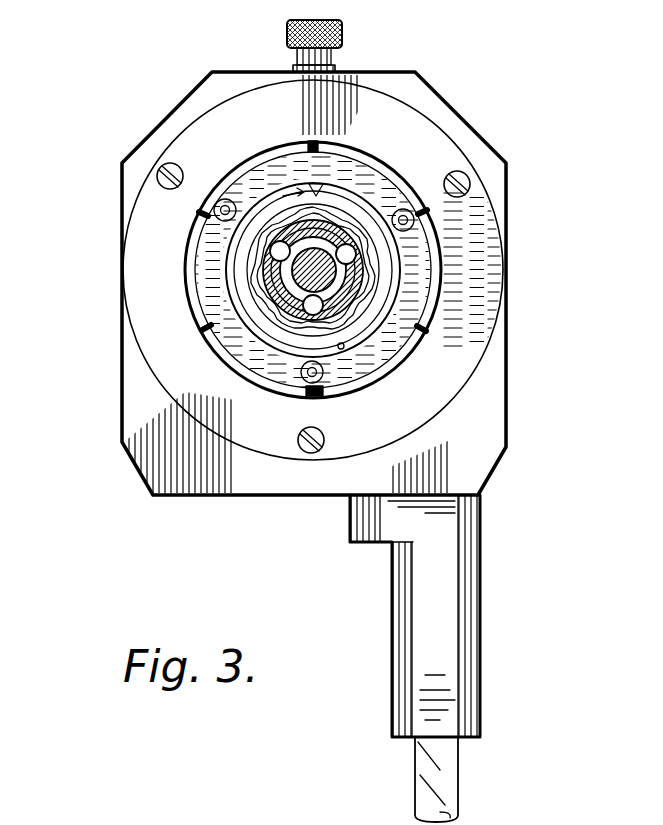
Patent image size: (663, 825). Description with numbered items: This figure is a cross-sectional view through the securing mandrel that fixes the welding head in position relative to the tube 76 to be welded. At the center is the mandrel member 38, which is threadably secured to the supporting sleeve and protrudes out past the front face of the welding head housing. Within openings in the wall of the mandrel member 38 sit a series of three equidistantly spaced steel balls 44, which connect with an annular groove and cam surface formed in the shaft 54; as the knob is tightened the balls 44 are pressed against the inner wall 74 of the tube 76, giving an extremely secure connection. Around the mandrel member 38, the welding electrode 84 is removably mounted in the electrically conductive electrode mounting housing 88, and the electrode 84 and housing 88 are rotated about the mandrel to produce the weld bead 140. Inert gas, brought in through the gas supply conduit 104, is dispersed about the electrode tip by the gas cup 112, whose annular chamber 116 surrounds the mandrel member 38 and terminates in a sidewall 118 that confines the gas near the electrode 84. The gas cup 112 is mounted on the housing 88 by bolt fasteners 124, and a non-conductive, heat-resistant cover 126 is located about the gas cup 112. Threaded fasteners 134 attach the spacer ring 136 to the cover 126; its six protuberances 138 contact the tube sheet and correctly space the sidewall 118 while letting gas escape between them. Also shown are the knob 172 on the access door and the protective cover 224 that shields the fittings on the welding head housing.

The mandrel member 38 is at (337, 258).
The second series of balls 44 is at (272, 222).
The shaft 54 is at (355, 272).
The inner wall 74 is at (293, 398).
The tube 76 is at (272, 290).
The welding electrode 84 is at (318, 190).
The electrode mounting housing 88 is at (262, 254).
The gas supply conduit 104 is at (427, 783).
The gas cup 112 is at (345, 300).
The annular chamber 116 is at (440, 440).
The sidewall 118 is at (343, 348).
The bolt fasteners 124 is at (213, 210).
The cover 126 is at (492, 394).
The threaded fasteners 134 is at (162, 170).
The spacer ring 136 is at (240, 392).
The protuberances 138 is at (305, 140).
The weld bead 140 is at (300, 306).
The knob 172 is at (287, 35).
The protective cover 224 is at (480, 613).